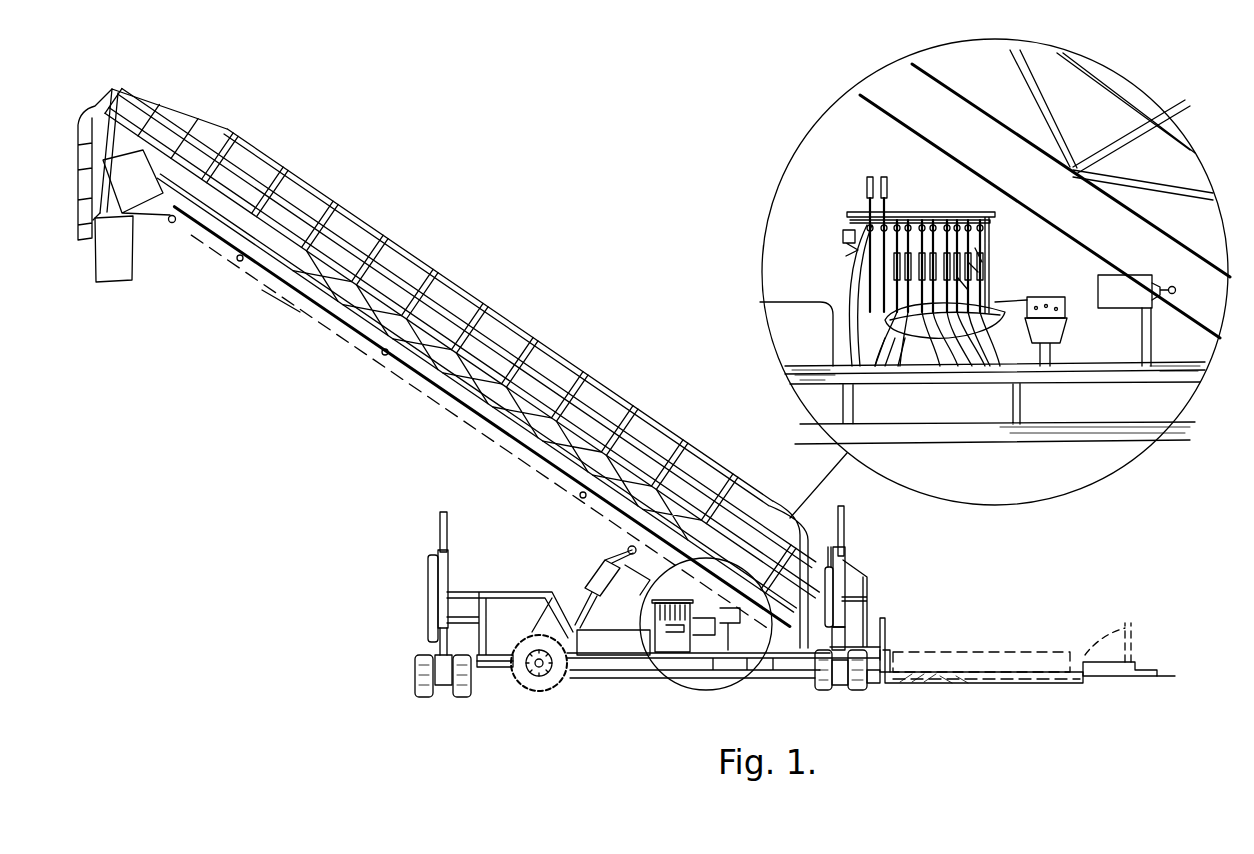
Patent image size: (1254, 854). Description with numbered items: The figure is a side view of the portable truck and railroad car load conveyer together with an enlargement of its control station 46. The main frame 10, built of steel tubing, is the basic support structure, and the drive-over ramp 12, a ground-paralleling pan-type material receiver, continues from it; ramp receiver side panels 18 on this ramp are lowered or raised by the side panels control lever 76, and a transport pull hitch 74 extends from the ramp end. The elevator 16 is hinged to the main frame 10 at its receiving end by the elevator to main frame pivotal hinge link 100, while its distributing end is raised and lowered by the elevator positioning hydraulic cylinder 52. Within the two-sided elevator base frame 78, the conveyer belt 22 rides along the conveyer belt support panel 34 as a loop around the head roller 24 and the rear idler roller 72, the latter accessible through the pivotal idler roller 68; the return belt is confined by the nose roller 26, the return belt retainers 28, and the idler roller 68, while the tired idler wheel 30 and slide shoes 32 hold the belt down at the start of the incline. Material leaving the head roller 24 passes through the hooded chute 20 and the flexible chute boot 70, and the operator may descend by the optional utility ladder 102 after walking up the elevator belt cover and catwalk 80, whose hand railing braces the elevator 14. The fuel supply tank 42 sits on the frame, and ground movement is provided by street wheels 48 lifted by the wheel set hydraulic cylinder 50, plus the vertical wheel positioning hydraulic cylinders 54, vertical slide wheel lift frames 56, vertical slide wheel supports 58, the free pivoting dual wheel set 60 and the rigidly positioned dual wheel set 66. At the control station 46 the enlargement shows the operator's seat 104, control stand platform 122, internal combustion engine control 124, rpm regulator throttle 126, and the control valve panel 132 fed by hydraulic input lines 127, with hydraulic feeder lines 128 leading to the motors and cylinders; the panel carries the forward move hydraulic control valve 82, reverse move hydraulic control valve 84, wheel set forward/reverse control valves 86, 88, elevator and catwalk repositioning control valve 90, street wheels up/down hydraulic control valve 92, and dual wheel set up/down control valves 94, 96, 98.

The main frame 10 is at (520, 592).
The drive-over ramp 12 is at (990, 680).
The elevator 14 is at (172, 95).
The elevator 16 is at (402, 243).
The ramp receiver side panels 18 is at (985, 650).
The hooded chute 20 is at (96, 232).
The conveyer belt 22 is at (540, 462).
The head roller 24 is at (148, 190).
The nose roller 26 is at (172, 224).
The return belt retainers 28 is at (240, 262).
The tired idler wheel 30 is at (890, 672).
The slide shoes 32 is at (885, 618).
The conveyer belt support panel 34 is at (285, 318).
The fuel supply tank 42 is at (605, 640).
The control station 46 is at (705, 690).
The street wheels 48 is at (530, 688).
The wheel set hydraulic cylinder 50 is at (497, 668).
The elevator positioning hydraulic cylinder 52 is at (590, 605).
The vertical wheel positioning hydraulic cylinders 54 is at (428, 605).
The vertical slide wheel lift frames 56 is at (445, 568).
The vertical slide wheel supports 58 is at (440, 520).
The free pivoting dual wheel set 60 is at (856, 690).
The rigidly positioned dual wheel set 66 is at (462, 700).
The pivotal idler roller 68 is at (1131, 625).
The chute boot 70 is at (118, 262).
The rear idler roller 72 is at (1110, 676).
The transport pull hitch 74 is at (1175, 676).
The side panels control lever 76 is at (890, 648).
The two-sided elevator base frame 78 is at (222, 243).
The elevator belt cover and catwalk 80 is at (427, 333).
The forward move hydraulic control valve 82 is at (865, 189).
The reverse move hydraulic control valve 84 is at (884, 175).
The wheel set forward/reverse control valve 86 is at (897, 222).
The wheel set forward/reverse control valve 88 is at (908, 222).
The elevator and catwalk repositioning control valve 90 is at (922, 222).
The street wheels up/down hydraulic control valve 92 is at (933, 222).
The dual wheel sets up/down control valve 94 is at (963, 283).
The dual wheel set up/down control valve 96 is at (975, 265).
The dual wheel set up/down control valve 98 is at (978, 255).
The elevator to main frame pivotal hinge link 100 is at (878, 684).
The optional utility ladder 102 is at (78, 125).
The operator's seat 104 is at (955, 345).
The control stand platform 122 is at (685, 653).
The internal combustion engine control 124 is at (1045, 300).
The rpm regulator throttle 126 is at (1135, 295).
The hydraulic input lines 127 is at (983, 240).
The hydraulic feeder lines 128 is at (893, 338).
The control valve panel 132 is at (847, 232).